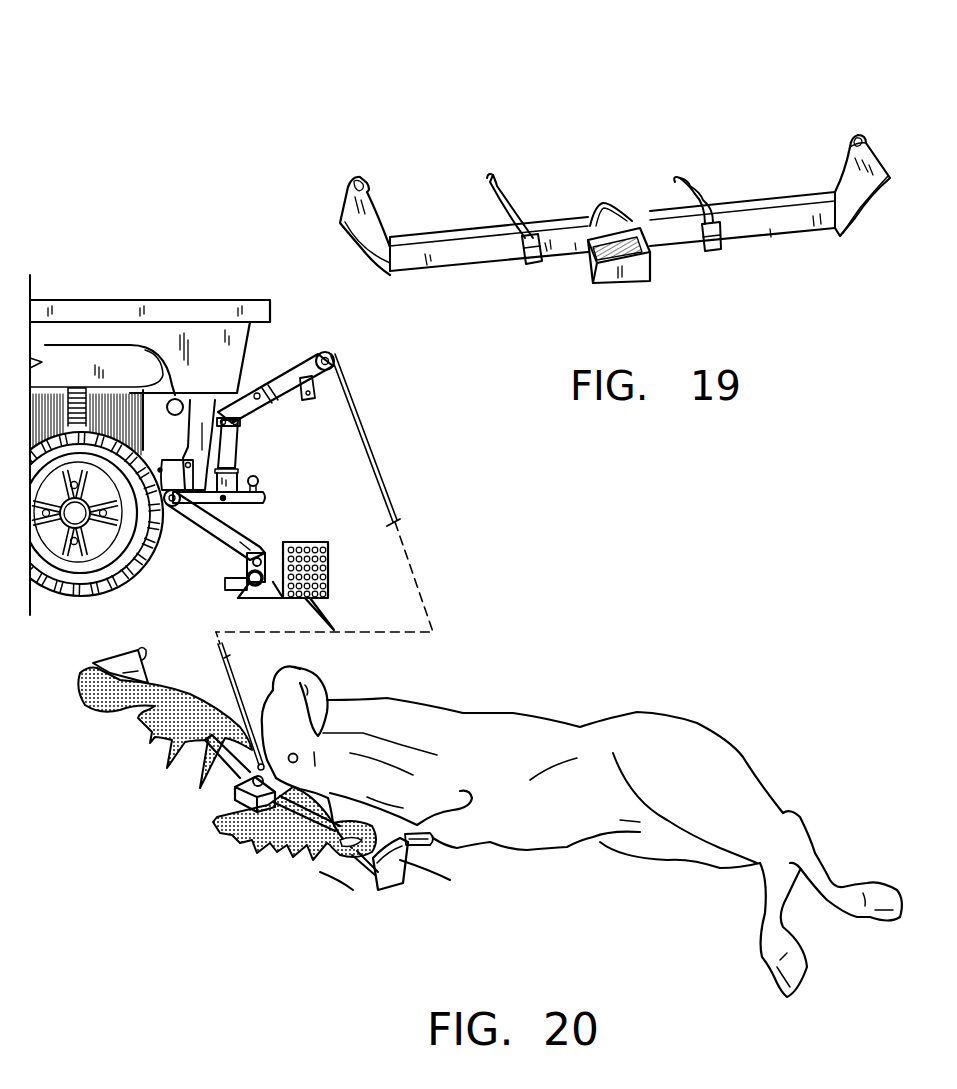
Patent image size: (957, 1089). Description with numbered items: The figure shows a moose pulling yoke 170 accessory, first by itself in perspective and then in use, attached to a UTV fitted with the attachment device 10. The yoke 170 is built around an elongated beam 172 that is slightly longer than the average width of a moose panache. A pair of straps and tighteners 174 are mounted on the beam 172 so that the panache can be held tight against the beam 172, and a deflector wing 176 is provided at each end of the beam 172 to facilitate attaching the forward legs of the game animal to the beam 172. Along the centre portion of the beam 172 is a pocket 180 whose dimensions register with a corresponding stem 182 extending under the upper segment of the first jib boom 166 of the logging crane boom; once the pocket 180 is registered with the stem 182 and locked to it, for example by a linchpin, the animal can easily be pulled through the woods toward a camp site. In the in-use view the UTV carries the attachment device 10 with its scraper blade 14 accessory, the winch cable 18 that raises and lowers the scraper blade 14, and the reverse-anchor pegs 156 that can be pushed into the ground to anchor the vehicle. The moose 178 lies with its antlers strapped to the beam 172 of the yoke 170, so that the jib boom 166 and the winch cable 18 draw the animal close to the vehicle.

In FIG. 20, the attachment device 10 is at (300, 436).
In FIG. 20, the scraper blade 14 is at (328, 568).
In FIG. 20, the winch cable 18 is at (388, 495).
In FIG. 20, the reverse-anchor pegs 156 is at (330, 614).
In FIG. 20, the first jib boom 166 is at (293, 372).
In FIG. 20, the stem 182 is at (320, 384).
In FIG. 19, the moose pulling yoke 170 is at (622, 92).
In FIG. 20, the moose pulling yoke 170 is at (388, 930).
In FIG. 19, the elongated beam 172 is at (449, 237).
In FIG. 20, the elongated beam 172 is at (365, 870).
In FIG. 19, the straps and tighteners 174 is at (523, 214).
In FIG. 19, the deflector wing 176 is at (382, 205).
In FIG. 20, the deflector wing 176 is at (405, 862).
In FIG. 20, the game animal 178 is at (505, 710).
In FIG. 19, the pocket 180 is at (640, 283).
In FIG. 20, the pocket 180 is at (218, 803).